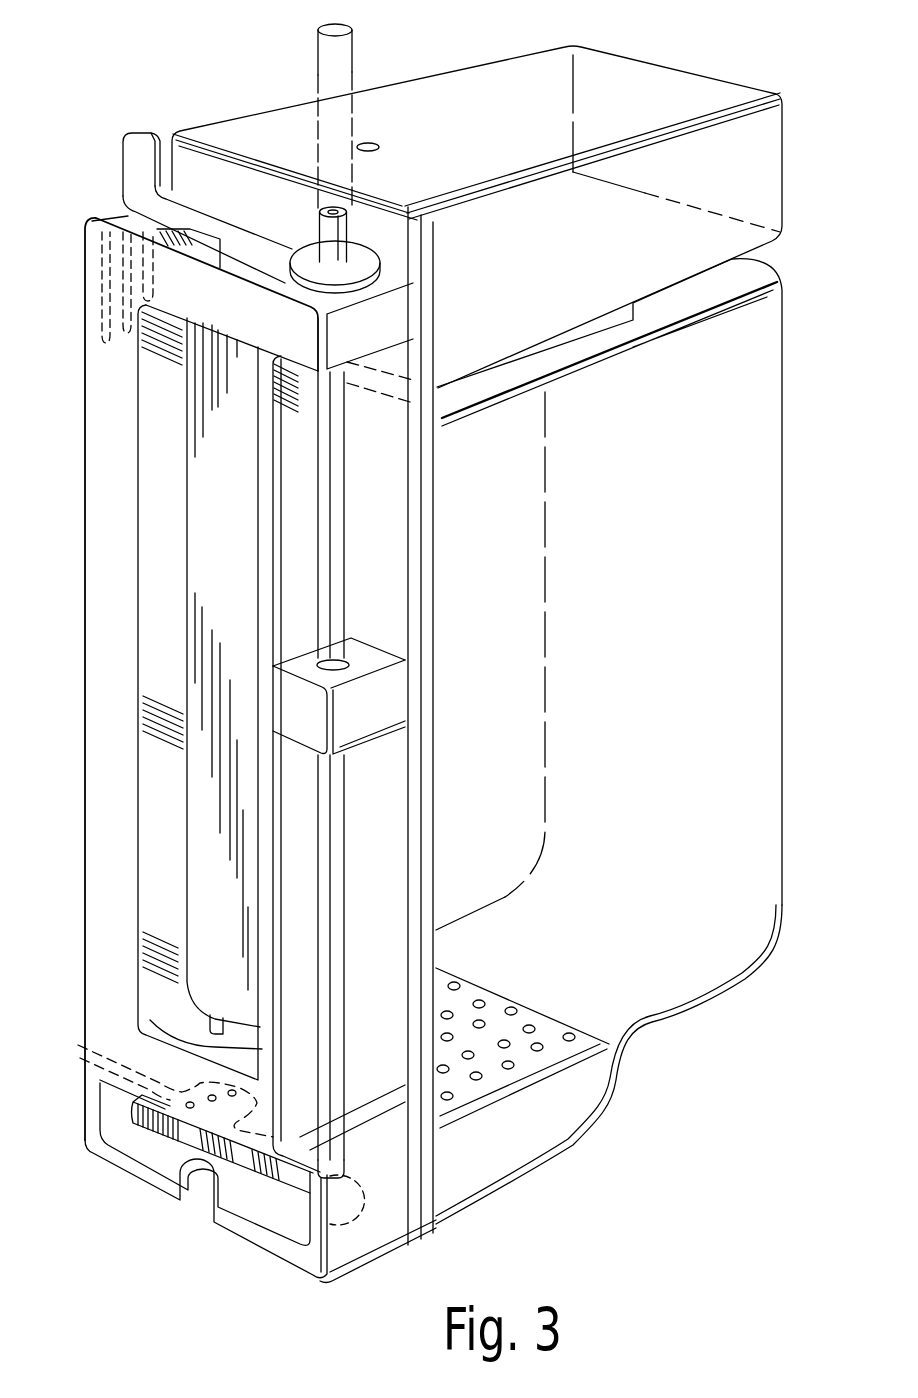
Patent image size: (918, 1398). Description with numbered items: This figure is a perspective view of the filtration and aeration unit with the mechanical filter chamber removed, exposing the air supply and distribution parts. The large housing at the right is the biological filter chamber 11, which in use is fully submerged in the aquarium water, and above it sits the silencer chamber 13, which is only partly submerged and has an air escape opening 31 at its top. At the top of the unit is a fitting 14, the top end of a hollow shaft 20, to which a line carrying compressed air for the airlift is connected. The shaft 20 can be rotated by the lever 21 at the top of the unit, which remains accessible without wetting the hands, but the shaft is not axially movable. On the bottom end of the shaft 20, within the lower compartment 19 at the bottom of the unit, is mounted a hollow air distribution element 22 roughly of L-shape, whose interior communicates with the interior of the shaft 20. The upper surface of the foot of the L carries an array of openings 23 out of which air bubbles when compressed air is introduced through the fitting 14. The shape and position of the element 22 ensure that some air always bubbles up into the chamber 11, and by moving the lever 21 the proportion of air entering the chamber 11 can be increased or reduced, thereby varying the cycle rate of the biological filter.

The biological filter chamber 11 is at (740, 598).
The silencer chamber 13 is at (748, 203).
The fitting 14 is at (326, 232).
The lower compartment 19 is at (515, 1166).
The hollow shaft 20 is at (333, 566).
The lever 21 is at (128, 167).
The air distribution element 22 is at (158, 1150).
The openings 23 is at (78, 1045).
The air escape opening 31 is at (372, 144).